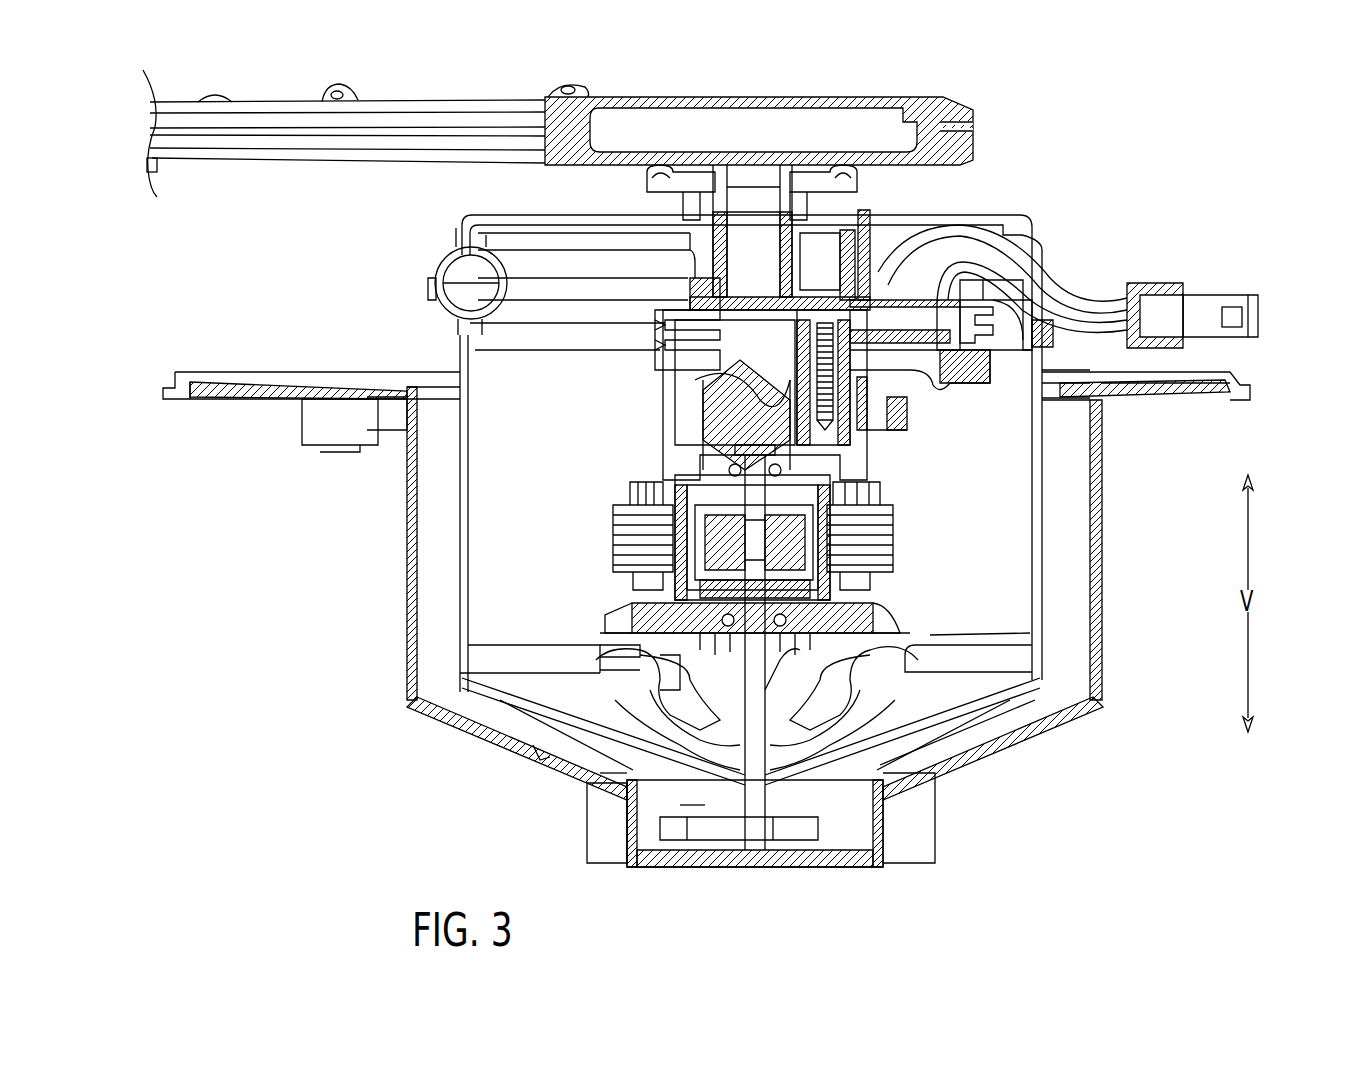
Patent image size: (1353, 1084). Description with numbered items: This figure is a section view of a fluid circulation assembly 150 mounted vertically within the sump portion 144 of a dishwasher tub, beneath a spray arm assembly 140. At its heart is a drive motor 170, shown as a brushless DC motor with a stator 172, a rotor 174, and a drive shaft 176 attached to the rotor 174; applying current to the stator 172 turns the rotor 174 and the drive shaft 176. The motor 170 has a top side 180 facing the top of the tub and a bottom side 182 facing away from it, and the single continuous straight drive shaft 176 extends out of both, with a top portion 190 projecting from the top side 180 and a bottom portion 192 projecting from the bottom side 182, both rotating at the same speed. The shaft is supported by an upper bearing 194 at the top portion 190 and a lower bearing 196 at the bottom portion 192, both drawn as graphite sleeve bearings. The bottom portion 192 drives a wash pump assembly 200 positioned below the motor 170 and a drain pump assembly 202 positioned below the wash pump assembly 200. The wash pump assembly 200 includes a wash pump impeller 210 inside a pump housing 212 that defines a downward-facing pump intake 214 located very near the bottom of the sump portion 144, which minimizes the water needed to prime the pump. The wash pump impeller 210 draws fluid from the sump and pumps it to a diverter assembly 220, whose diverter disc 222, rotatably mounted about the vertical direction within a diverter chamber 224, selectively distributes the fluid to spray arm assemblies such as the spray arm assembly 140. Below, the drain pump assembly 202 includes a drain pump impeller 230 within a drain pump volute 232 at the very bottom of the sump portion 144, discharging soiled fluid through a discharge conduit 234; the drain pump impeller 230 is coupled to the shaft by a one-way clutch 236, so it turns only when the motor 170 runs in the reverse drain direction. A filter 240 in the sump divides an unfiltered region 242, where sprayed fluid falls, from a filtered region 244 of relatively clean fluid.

The spray arm assembly 140 is at (470, 100).
The sump portion 144 is at (500, 552).
The fluid circulation assembly 150 is at (468, 520).
The drive motor 170 is at (912, 495).
The stator 172 is at (878, 528).
The rotor 174 is at (870, 555).
The drive shaft 176 is at (622, 702).
The top side 180 is at (690, 505).
The bottom side 182 is at (695, 595).
The top portion 190 is at (785, 497).
The bottom portion 192 is at (855, 755).
The upper bearing 194 is at (705, 482).
The lower bearing 196 is at (815, 592).
The wash pump assembly 200 is at (618, 700).
The drain pump assembly 202 is at (762, 875).
The wash pump impeller 210 is at (1020, 700).
The pump housing 212 is at (1045, 660).
The pump intake 214 is at (630, 775).
The diverter assembly 220 is at (650, 360).
The diverter disc 222 is at (895, 340).
The diverter chamber 224 is at (918, 357).
The drain pump impeller 230 is at (705, 840).
The drain pump volute 232 is at (858, 842).
The discharge conduit 234 is at (680, 845).
The one-way clutch 236 is at (752, 848).
The filter 240 is at (520, 700).
The unfiltered region 242 is at (1072, 535).
The filtered region 244 is at (1018, 608).